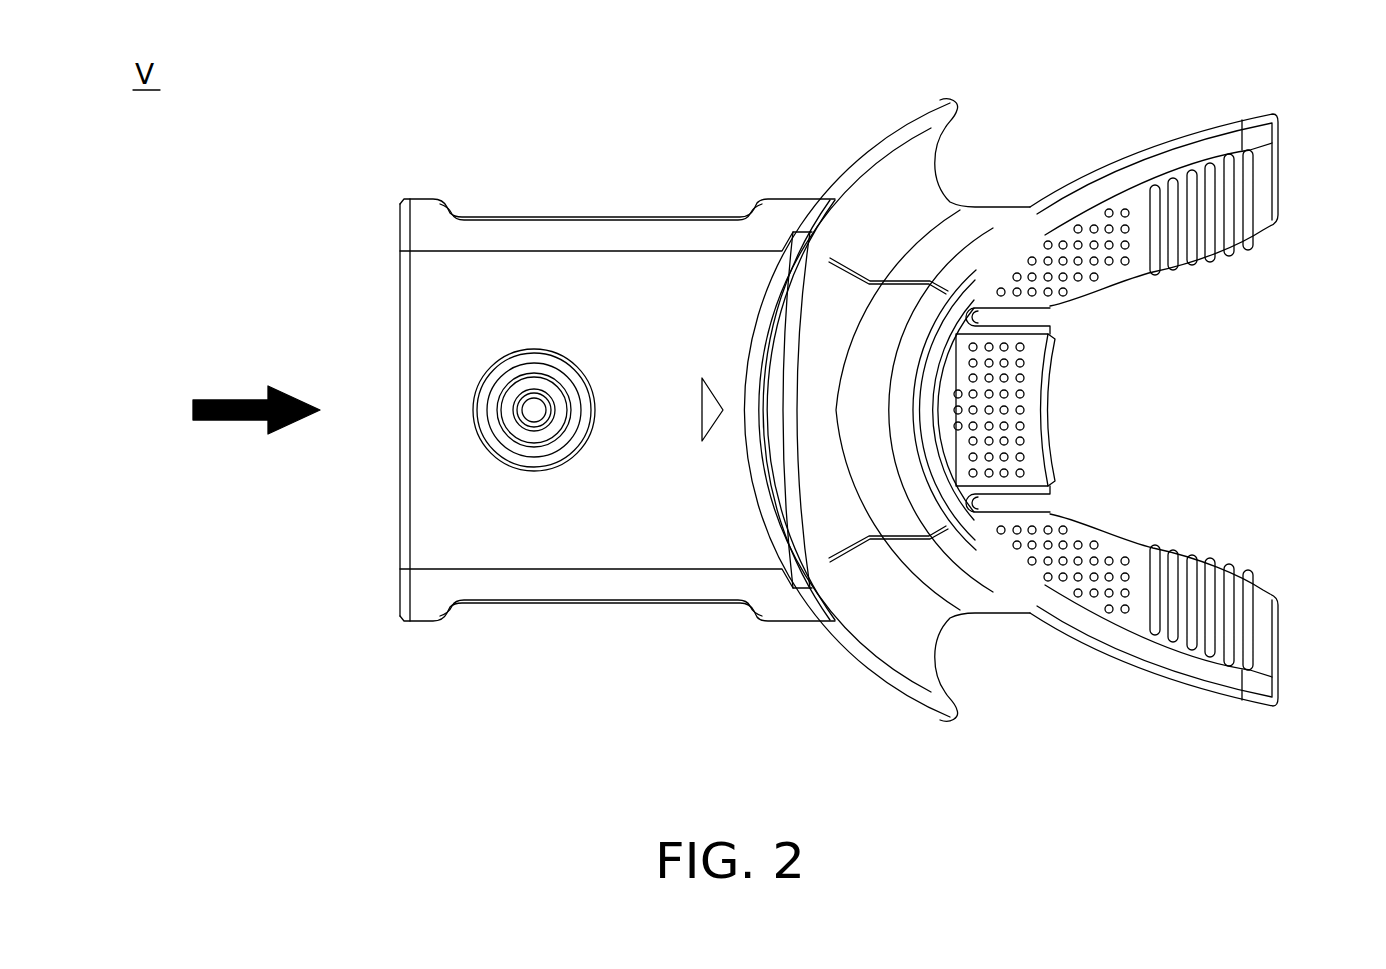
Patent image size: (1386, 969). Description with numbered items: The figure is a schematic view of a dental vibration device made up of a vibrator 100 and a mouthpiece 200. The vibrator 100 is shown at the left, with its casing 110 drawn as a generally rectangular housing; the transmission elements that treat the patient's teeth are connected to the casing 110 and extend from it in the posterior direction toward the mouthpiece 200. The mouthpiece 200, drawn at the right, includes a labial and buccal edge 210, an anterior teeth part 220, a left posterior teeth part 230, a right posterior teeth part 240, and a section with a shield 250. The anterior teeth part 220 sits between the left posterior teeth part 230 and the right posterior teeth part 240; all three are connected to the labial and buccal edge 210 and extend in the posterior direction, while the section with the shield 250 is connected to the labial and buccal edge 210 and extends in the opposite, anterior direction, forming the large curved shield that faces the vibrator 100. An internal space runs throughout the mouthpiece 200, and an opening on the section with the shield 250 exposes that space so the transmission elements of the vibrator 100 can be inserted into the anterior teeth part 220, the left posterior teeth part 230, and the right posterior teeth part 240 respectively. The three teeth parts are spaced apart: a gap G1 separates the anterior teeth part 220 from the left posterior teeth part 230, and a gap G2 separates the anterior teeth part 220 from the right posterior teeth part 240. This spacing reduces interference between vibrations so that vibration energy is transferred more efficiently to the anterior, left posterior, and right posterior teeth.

The vibrator 100 is at (607, 416).
The casing 110 is at (606, 540).
The mouthpiece 200 is at (1057, 403).
The labial and buccal edge 210 is at (1047, 210).
The anterior teeth part 220 is at (1020, 402).
The left posterior teeth part 230 is at (1265, 178).
The right posterior teeth part 240 is at (1265, 641).
The section with a shield 250 is at (903, 638).
The gap G1 is at (1035, 318).
The gap G2 is at (1035, 506).